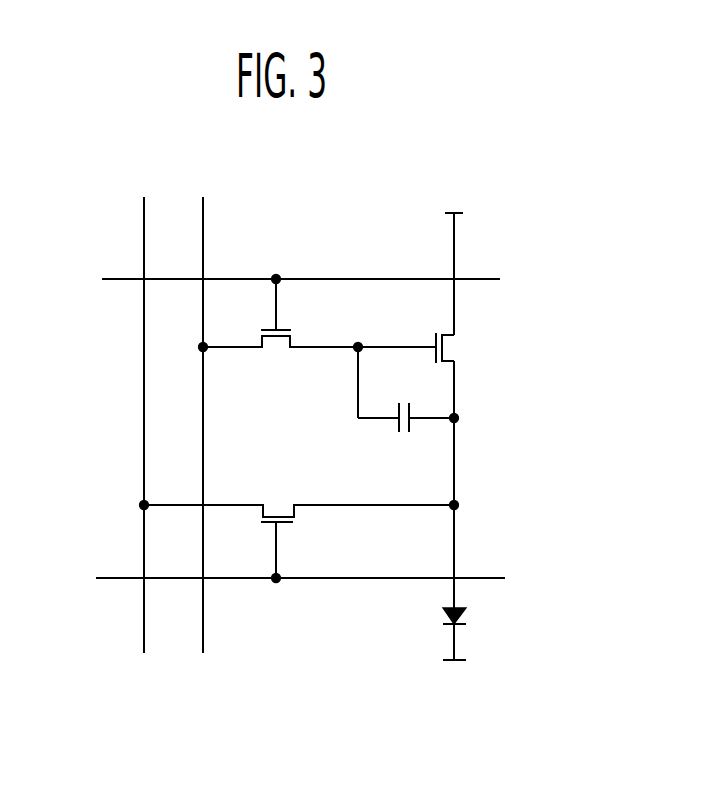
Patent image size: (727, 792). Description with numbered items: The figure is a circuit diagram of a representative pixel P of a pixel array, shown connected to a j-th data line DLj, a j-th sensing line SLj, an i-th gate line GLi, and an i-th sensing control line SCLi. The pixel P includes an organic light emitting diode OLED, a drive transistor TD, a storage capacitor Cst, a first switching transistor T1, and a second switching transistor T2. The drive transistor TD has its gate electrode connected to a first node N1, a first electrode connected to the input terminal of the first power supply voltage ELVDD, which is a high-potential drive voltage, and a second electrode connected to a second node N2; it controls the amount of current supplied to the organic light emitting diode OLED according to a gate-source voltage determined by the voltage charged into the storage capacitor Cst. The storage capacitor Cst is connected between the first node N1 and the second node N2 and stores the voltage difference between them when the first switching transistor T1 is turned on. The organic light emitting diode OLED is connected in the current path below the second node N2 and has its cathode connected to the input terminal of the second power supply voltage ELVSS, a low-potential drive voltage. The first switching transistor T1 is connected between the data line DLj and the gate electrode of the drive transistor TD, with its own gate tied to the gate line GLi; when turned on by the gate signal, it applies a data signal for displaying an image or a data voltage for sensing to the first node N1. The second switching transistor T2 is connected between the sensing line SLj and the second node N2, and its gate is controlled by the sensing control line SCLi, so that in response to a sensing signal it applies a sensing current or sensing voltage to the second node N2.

The pixel P is at (526, 161).
The sensing line SLj is at (143, 220).
The data line DLj is at (203, 220).
The gate line GLi is at (285, 281).
The sensing control line SCLi is at (280, 580).
The first power supply voltage ELVDD is at (454, 258).
The second power supply voltage ELVSS is at (454, 677).
The first switching transistor T1 is at (279, 327).
The second switching transistor T2 is at (299, 530).
The drive transistor TD is at (458, 375).
The first node N1 is at (393, 368).
The second node N2 is at (467, 456).
The storage capacitor Cst is at (406, 434).
The organic light emitting diode OLED is at (477, 582).